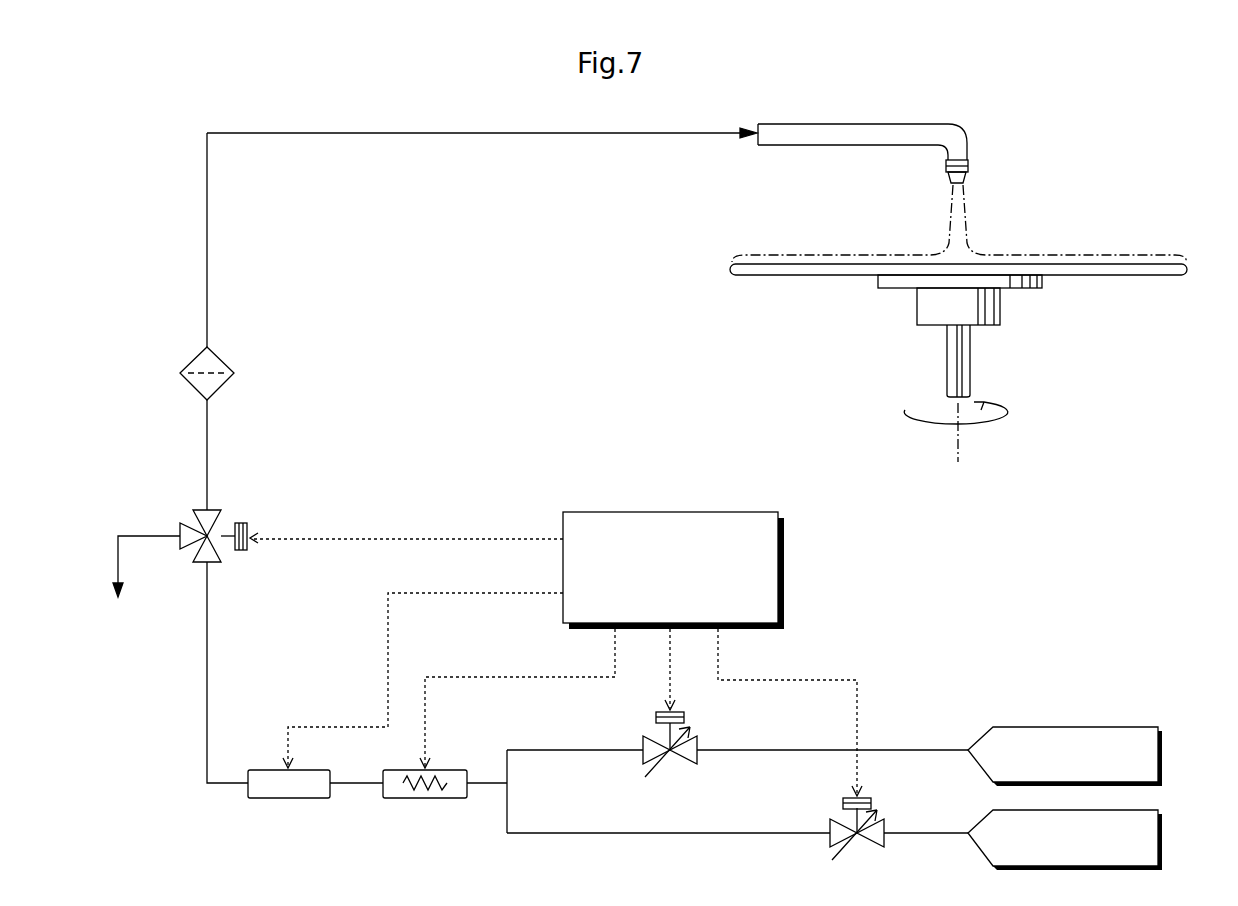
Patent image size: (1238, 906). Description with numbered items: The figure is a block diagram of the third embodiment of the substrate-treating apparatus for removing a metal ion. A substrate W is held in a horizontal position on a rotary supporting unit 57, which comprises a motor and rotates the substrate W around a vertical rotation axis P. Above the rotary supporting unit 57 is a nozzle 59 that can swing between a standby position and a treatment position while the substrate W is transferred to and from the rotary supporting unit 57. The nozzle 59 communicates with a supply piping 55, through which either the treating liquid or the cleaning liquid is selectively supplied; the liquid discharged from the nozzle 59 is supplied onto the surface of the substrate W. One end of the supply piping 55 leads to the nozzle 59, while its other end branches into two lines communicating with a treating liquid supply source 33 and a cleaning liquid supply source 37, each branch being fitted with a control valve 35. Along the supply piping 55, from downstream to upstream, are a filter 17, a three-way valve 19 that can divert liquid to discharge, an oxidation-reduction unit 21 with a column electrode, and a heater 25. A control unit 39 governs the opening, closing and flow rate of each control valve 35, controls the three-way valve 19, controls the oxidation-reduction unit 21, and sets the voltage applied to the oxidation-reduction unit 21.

The filter 17 is at (232, 366).
The three-way valve 19 is at (245, 552).
The oxidation-reduction unit 21 is at (292, 800).
The heater 25 is at (420, 800).
The treating liquid supply source 33 is at (1162, 820).
The control valve 35 is at (642, 753).
The cleaning liquid supply source 37 is at (1162, 738).
The control unit 39 is at (676, 511).
The supply piping 55 is at (207, 462).
The rotary supporting unit 57 is at (1030, 320).
The nozzle 59 is at (878, 147).
The substrate W is at (1092, 260).
The rotation axis P is at (956, 446).